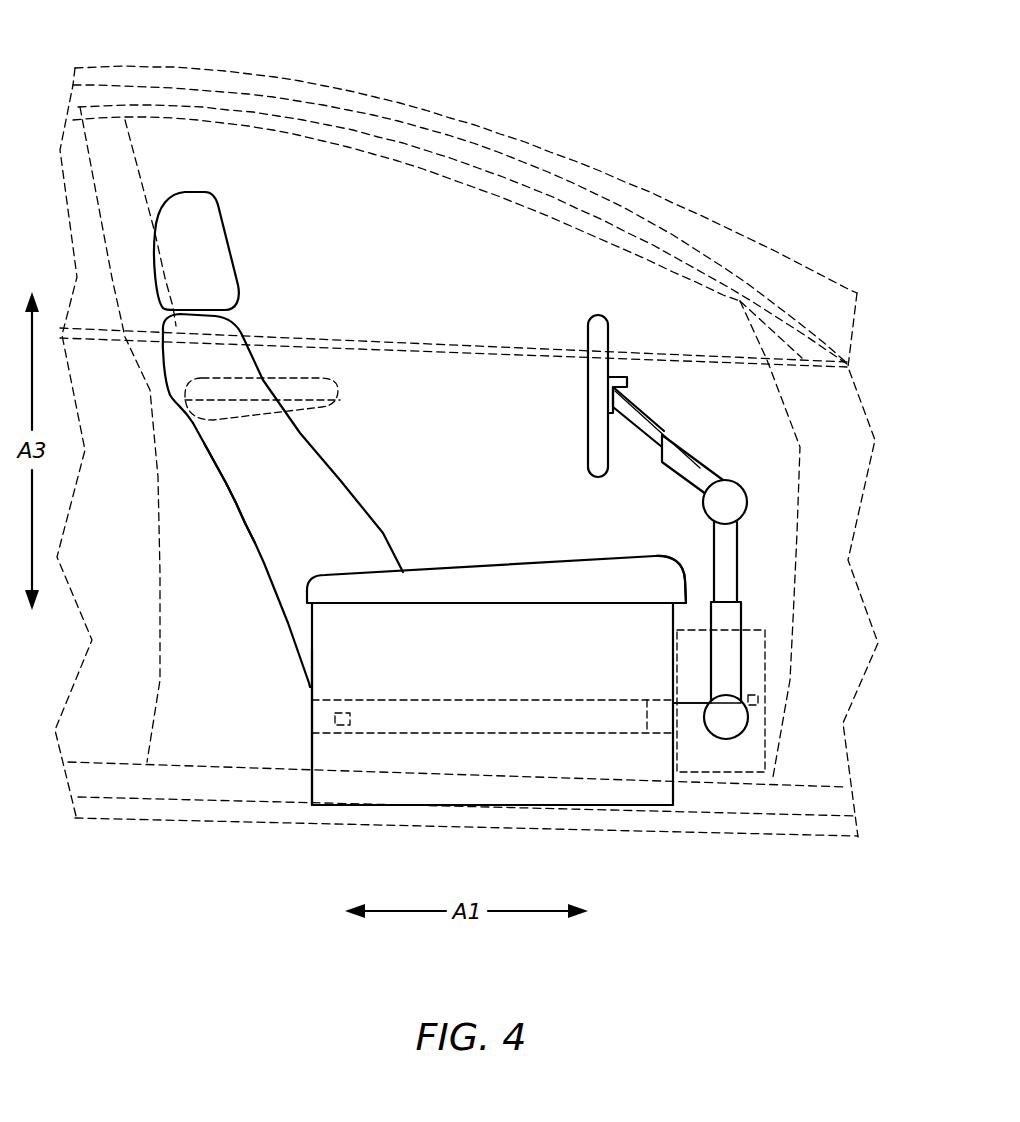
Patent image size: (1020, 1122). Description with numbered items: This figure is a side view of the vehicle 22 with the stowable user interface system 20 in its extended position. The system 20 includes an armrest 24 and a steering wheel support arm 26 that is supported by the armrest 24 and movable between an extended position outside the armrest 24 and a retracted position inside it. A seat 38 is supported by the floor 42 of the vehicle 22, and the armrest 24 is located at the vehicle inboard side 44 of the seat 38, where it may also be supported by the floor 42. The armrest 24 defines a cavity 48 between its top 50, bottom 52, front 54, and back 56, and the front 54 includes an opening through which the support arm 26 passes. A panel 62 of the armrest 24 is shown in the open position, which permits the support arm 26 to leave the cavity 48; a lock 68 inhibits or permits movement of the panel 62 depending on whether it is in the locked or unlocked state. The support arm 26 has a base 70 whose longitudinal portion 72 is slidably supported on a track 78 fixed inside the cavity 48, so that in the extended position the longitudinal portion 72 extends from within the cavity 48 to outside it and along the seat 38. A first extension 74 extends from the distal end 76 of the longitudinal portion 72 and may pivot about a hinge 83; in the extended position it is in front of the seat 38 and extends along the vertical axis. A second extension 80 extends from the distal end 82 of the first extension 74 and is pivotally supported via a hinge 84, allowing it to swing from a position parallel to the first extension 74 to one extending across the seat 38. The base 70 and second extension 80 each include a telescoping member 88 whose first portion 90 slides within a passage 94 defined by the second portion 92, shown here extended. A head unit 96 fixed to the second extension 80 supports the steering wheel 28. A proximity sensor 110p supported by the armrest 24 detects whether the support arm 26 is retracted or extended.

The stowable user interface system 20 is at (519, 481).
The vehicle 22 is at (288, 82).
The armrest 24 is at (432, 533).
The steering wheel support arm 26 is at (784, 548).
The steering wheel 28 is at (588, 335).
The seat 38 is at (330, 465).
The floor 42 is at (703, 805).
The vehicle inboard side 44 is at (278, 523).
The cavity 48 is at (582, 630).
The top 50 is at (470, 565).
The bottom 52 is at (515, 806).
The front 54 is at (680, 603).
The back 56 is at (312, 697).
The panel 62 is at (765, 720).
The lock 68 is at (759, 698).
The base 70 is at (762, 737).
The longitudinal portion 72 is at (693, 730).
The first extension 74 is at (741, 613).
The distal end 76 is at (703, 717).
The track 78 is at (440, 700).
The second extension 80 is at (640, 483).
The distal end 82 is at (722, 522).
The hinge 83 is at (735, 722).
The hinge 84 is at (737, 497).
The telescoping member 88 is at (724, 539).
The first portion 90 is at (655, 410).
The second portion 92 is at (687, 436).
The passage 94 is at (700, 470).
The head unit 96 is at (617, 377).
The proximity sensor 110p is at (340, 733).